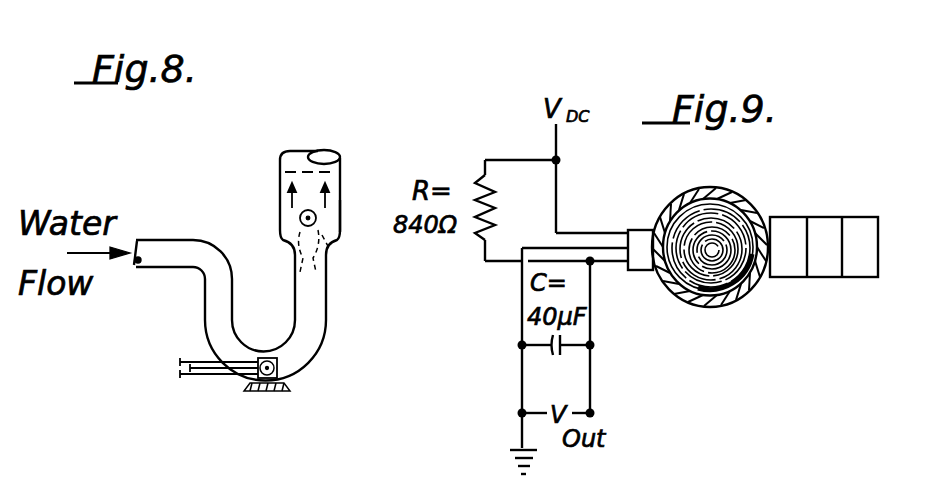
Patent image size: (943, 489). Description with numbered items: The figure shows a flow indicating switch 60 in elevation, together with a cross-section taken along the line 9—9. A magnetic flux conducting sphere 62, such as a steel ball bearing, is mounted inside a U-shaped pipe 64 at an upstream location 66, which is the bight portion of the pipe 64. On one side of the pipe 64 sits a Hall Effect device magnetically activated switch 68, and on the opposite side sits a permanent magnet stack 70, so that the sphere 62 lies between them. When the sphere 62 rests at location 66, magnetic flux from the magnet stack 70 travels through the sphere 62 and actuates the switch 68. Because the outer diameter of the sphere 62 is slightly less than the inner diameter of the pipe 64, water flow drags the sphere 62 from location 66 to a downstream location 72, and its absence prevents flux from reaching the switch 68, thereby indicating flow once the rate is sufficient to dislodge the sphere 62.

In FIG. 8, the section line 9— 9 is at (267, 430).
In FIG. 8, the flow indicating switch 60 is at (405, 168).
In FIG. 8, the magnetic flux conducting sphere 62 is at (342, 242).
In FIG. 9, the magnetic flux conducting sphere 62 is at (710, 282).
In FIG. 8, the pipe 64 is at (312, 328).
In FIG. 9, the pipe 64 is at (690, 303).
In FIG. 8, the upstream location 66 is at (277, 377).
In FIG. 8, the Hall Effect device magnetically activated switch 68 is at (252, 386).
In FIG. 9, the Hall Effect device magnetically activated switch 68 is at (640, 229).
In FIG. 9, the permanent magnet stack 70 is at (823, 278).
In FIG. 8, the downstream location 72 is at (342, 215).